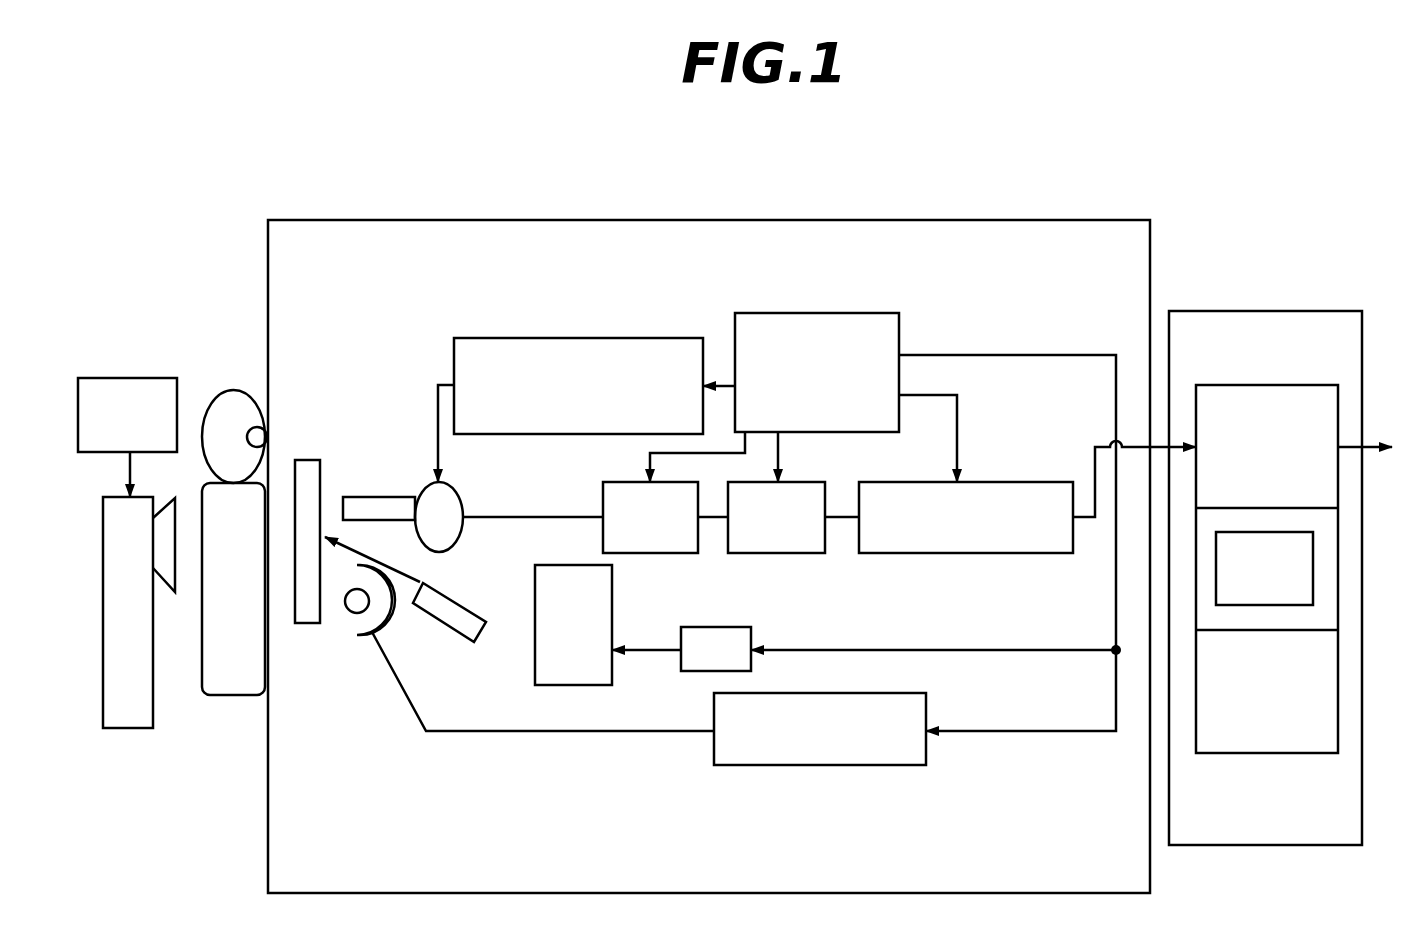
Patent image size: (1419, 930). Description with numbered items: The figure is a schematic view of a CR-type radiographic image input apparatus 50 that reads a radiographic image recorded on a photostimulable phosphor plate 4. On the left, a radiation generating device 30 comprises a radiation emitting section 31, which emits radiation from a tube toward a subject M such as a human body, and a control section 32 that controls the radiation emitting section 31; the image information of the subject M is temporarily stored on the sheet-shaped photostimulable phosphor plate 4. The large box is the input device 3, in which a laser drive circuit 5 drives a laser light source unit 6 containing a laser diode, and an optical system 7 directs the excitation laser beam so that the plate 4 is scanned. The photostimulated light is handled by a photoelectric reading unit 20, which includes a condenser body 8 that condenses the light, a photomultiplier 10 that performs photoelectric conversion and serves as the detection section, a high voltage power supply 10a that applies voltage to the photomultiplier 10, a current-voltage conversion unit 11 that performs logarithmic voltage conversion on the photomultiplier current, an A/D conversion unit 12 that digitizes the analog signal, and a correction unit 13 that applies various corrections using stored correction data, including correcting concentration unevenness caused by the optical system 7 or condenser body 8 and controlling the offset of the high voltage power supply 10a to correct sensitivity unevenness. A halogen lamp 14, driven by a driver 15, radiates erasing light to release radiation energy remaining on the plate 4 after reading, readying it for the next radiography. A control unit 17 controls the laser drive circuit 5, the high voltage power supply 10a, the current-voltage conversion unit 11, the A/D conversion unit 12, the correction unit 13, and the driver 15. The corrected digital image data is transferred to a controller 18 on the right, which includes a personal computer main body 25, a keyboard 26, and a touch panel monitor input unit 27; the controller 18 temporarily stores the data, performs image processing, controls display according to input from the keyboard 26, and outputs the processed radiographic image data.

The radiographic image input apparatus 50 is at (1022, 213).
The input device 3 is at (910, 280).
The control section 32 is at (127, 378).
The radiation emitting section 31 is at (153, 713).
The radiation generating device 30 is at (128, 737).
The subject M is at (235, 390).
The photostimulable phosphor plate 4 is at (308, 460).
The condenser body 8 is at (358, 497).
The photomultiplier 10 is at (457, 547).
The photoelectric reading unit 20 is at (416, 478).
The high voltage power supply 10a is at (553, 338).
The control unit 17 is at (787, 313).
The current-voltage conversion unit 11 is at (603, 500).
The A/D conversion unit 12 is at (815, 553).
The correction unit 13 is at (975, 553).
The laser light source unit 6 is at (612, 593).
The laser drive circuit 5 is at (733, 627).
The optical system 7 is at (483, 640).
The halogen lamp 14 is at (347, 613).
The driver 15 is at (830, 765).
The controller 18 is at (1266, 303).
The personal computer main body 25 is at (1260, 385).
The touch panel monitor input unit 27 is at (1338, 585).
The keyboard 26 is at (1263, 753).